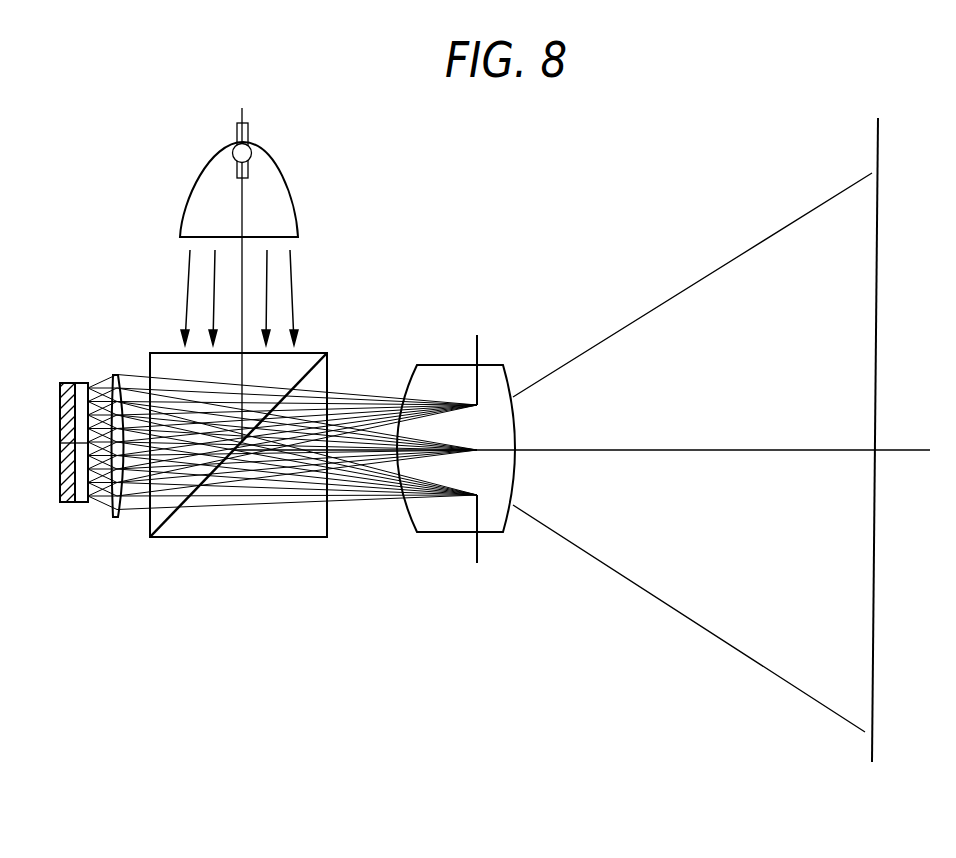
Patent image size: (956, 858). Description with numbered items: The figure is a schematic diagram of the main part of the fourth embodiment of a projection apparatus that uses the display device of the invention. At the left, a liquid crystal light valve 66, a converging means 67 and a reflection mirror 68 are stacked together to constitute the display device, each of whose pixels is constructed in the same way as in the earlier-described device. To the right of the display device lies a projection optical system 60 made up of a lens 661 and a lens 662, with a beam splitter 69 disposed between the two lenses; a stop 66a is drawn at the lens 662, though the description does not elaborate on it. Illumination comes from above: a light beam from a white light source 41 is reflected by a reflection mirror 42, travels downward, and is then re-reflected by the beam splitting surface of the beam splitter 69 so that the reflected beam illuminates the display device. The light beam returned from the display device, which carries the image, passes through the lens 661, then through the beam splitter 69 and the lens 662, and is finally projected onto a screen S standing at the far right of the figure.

The white light source 41 is at (233, 150).
The reflection mirror 42 is at (293, 185).
The beam splitter 69 is at (314, 352).
The reflection mirror 68 is at (68, 503).
The liquid crystal light valve 66 is at (80, 503).
The converging means 67 is at (92, 503).
The lens 661 is at (113, 515).
The lens 662 is at (476, 552).
The aperture stop 66a is at (480, 340).
The projection optical system 60 is at (421, 632).
The screen S is at (878, 129).